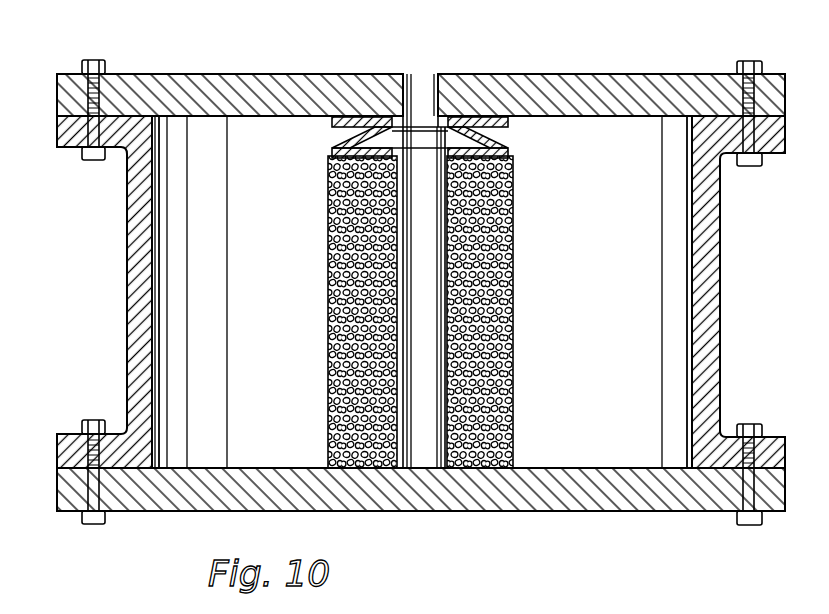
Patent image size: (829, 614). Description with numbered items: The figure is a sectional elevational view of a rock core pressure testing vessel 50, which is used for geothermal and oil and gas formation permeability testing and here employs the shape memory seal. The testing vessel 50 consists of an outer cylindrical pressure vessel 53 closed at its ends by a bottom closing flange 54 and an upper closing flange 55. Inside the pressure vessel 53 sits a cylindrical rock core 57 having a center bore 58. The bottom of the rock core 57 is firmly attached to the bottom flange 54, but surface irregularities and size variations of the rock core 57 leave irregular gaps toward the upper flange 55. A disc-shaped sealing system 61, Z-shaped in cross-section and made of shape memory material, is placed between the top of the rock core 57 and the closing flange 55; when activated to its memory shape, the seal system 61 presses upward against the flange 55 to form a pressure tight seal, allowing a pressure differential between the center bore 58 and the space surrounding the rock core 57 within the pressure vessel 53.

The rock core pressure testing vessel 50 is at (403, 285).
The outer cylindrical pressure vessel 53 is at (722, 259).
The bottom closing flange 54 is at (610, 506).
The upper closing flange 55 is at (200, 81).
The cylindrical rock core 57 is at (515, 321).
The center bore 58 is at (405, 452).
The disc-shaped sealing system 61 is at (506, 135).